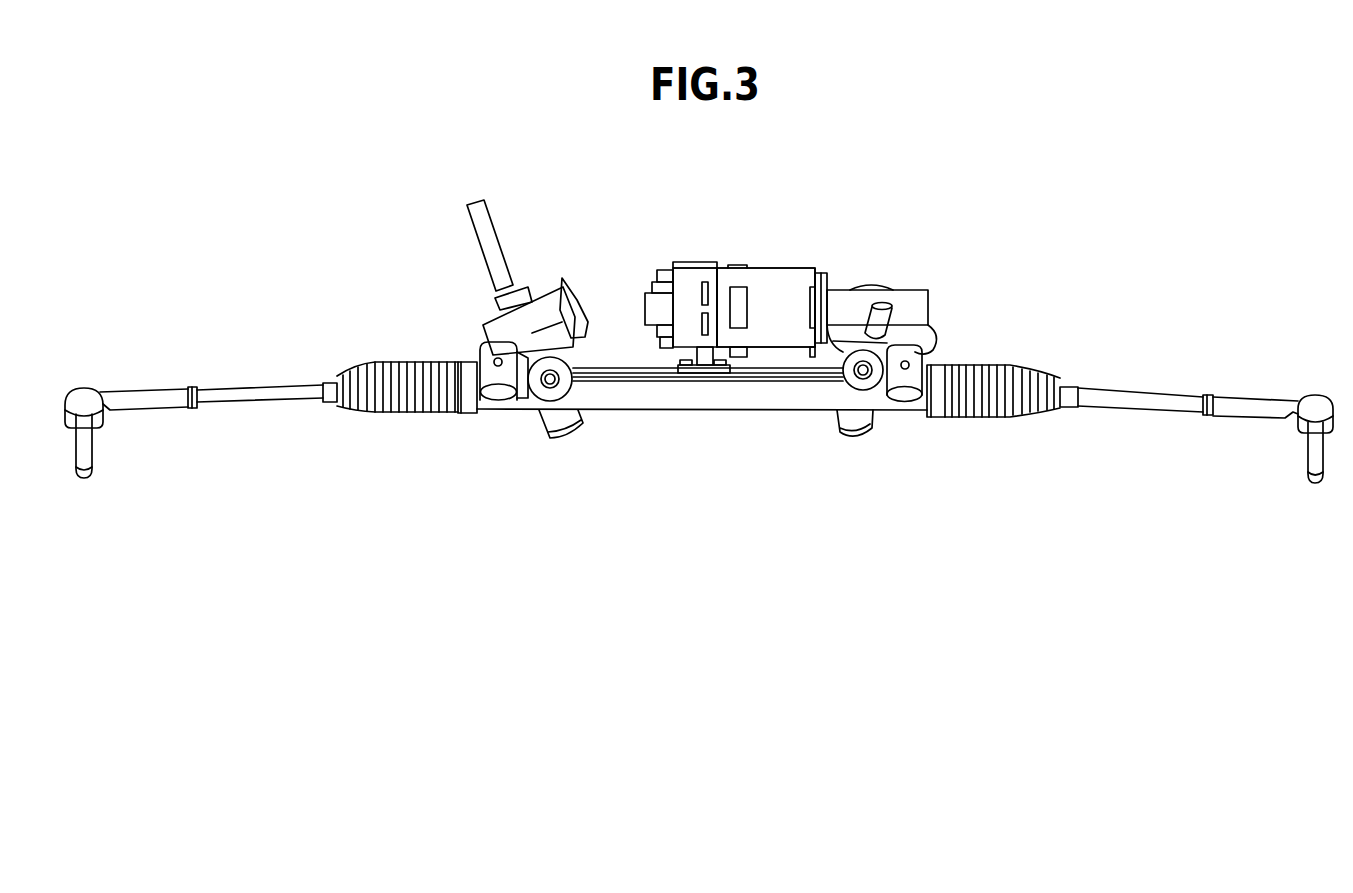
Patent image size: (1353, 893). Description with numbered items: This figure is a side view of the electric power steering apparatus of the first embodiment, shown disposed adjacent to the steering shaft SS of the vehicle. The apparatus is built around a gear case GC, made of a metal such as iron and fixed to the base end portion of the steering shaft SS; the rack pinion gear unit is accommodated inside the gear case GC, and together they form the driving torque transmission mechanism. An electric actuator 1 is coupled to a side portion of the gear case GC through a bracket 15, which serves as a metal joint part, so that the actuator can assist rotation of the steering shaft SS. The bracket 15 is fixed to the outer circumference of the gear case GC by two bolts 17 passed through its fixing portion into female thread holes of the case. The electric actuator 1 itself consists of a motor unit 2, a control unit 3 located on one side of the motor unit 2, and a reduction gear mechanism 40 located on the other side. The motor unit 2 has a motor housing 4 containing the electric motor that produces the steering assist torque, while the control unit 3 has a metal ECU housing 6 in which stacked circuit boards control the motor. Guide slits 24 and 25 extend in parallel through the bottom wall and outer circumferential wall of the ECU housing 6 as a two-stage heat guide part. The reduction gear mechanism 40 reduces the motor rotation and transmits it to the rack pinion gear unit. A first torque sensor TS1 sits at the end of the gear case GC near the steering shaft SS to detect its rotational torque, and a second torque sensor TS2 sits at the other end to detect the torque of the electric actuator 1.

The electric actuator 1 is at (788, 233).
The motor unit 2 is at (758, 267).
The control unit (ECU) 3 is at (685, 262).
The motor housing 4 is at (793, 283).
The ECU housing 6 is at (707, 263).
The bracket 15 is at (705, 374).
The bolts 17 is at (686, 374).
The guide slit 24 is at (704, 321).
The guide slit 25 is at (702, 292).
The reduction gear mechanism 40 is at (873, 277).
The steering shaft SS is at (478, 228).
The gear case GC is at (605, 411).
The first torque sensor TS1 is at (500, 372).
The second torque sensor TS2 is at (915, 365).